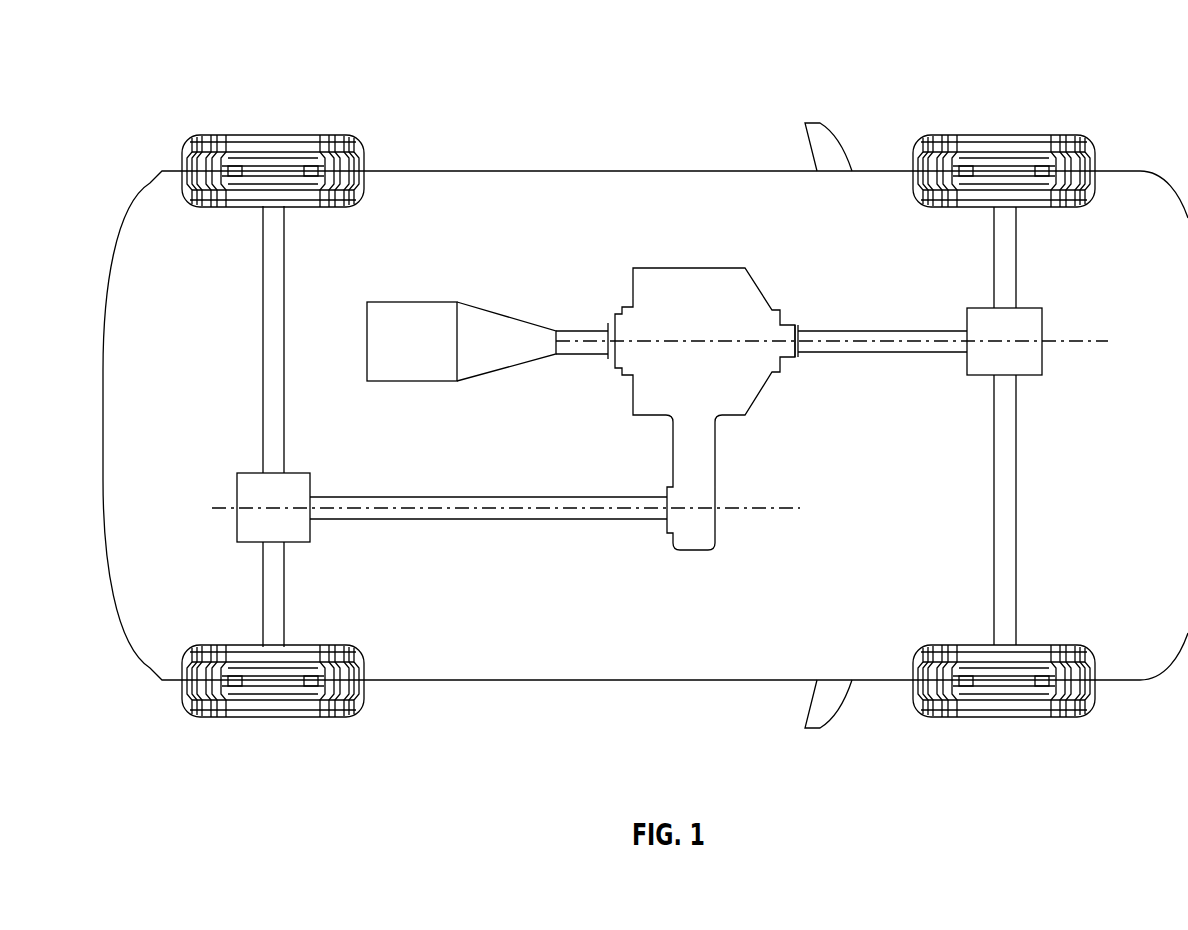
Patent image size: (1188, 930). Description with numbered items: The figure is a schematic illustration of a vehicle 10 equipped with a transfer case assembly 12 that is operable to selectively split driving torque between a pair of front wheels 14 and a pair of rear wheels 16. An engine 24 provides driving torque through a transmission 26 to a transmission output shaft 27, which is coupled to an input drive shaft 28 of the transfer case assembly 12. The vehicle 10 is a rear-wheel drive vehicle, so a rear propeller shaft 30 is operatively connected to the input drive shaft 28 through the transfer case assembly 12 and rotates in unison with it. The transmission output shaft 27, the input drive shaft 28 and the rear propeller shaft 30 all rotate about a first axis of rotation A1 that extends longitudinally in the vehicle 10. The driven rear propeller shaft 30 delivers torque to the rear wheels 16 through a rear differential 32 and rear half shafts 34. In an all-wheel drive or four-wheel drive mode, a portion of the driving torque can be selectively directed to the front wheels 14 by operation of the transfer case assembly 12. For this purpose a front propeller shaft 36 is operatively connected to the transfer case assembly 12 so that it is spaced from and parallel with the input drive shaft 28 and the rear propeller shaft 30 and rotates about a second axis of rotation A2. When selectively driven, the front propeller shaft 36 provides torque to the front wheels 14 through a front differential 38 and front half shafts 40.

The vehicle 10 is at (925, 58).
The transfer case assembly 12 is at (718, 428).
The front wheels 14 is at (232, 136).
The rear wheels 16 is at (1045, 136).
The engine 24 is at (417, 318).
The transmission 26 is at (490, 325).
The transmission output shaft 27 is at (560, 331).
The input drive shaft 28 is at (608, 324).
The rear propeller shaft 30 is at (896, 322).
The rear differential 32 is at (1033, 330).
The rear half shafts 34 is at (1017, 252).
The front propeller shaft 36 is at (490, 522).
The front differential 38 is at (257, 480).
The front half shafts 40 is at (262, 262).
The first axis of rotation A1 is at (1095, 343).
The second axis of rotation A2 is at (762, 507).